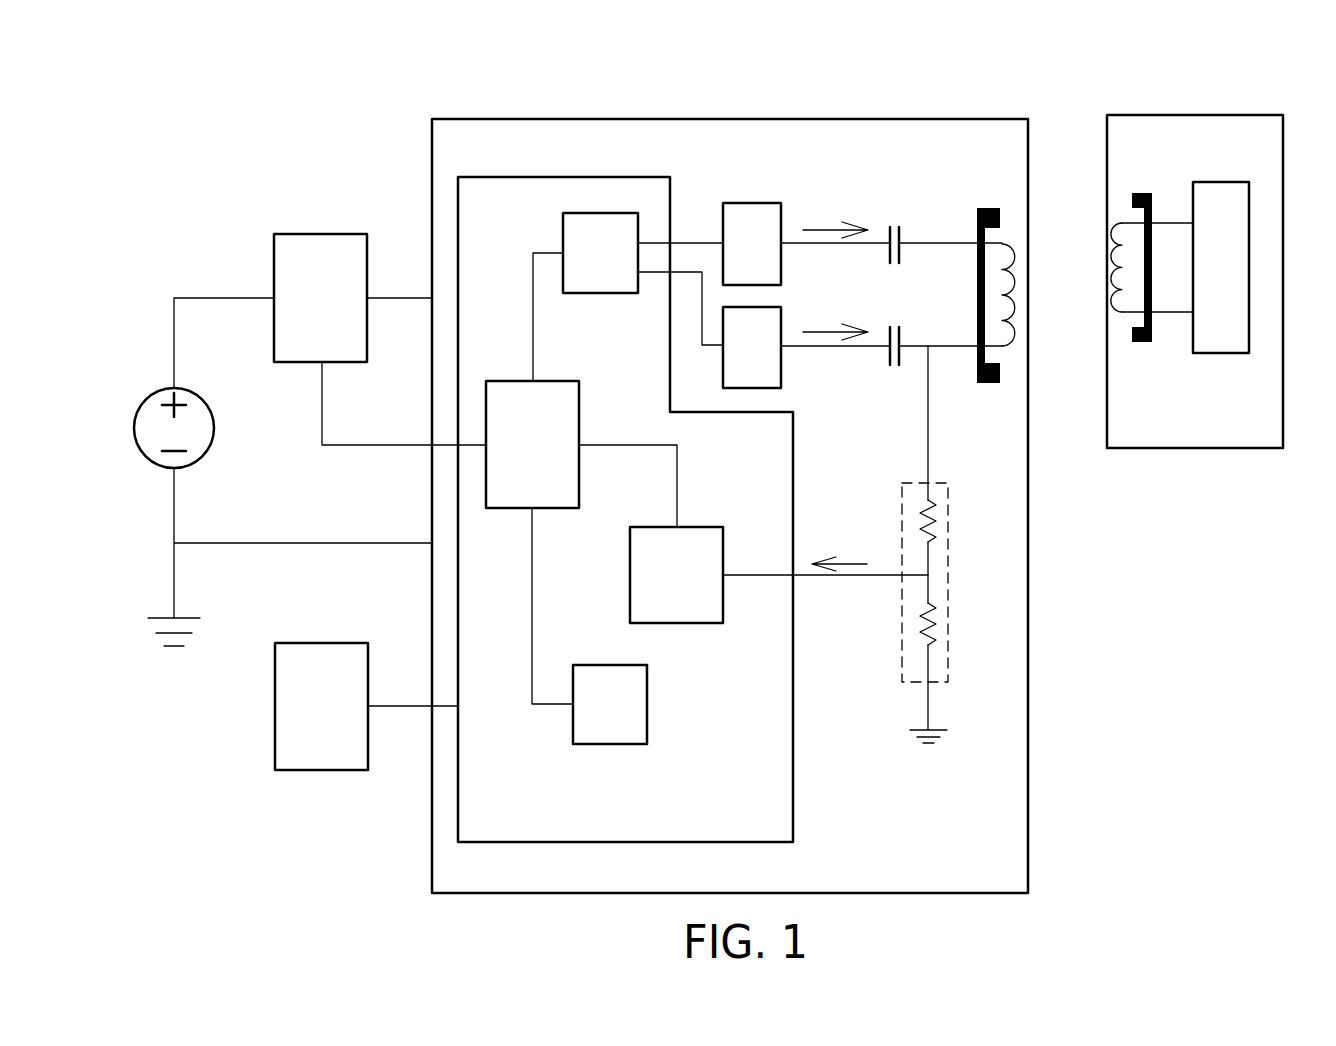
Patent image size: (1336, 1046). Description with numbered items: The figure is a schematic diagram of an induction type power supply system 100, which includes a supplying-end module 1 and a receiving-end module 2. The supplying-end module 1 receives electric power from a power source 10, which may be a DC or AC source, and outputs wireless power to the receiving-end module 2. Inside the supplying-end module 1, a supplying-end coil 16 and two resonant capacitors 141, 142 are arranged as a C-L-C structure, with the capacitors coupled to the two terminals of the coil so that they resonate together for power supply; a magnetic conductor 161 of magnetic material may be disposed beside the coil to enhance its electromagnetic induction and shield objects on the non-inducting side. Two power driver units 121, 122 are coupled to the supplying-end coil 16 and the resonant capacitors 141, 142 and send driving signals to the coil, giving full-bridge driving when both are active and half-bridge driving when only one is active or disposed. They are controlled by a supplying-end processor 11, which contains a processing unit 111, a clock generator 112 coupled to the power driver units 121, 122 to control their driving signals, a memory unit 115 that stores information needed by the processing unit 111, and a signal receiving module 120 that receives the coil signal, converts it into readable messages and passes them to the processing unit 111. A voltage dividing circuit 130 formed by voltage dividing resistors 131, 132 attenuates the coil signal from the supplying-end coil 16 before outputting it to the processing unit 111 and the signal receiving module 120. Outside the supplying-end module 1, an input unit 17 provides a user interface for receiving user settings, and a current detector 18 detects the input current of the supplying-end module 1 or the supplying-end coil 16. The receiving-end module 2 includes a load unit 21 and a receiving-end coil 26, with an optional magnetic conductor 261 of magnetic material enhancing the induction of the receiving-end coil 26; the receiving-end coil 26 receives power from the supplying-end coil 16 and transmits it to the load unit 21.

The induction type power supply system 100 is at (222, 130).
The supplying-end module 1 is at (1028, 757).
The receiving-end module 2 is at (1193, 448).
The power source 10 is at (217, 428).
The supplying-end processor 11 is at (793, 757).
The supplying-end coil 16 is at (1016, 253).
The magnetic conductor 161 is at (990, 208).
The input unit 17 is at (336, 728).
The current detector 18 is at (337, 316).
The processing unit 111 is at (553, 465).
The clock generator 112 is at (623, 275).
The memory unit 115 is at (633, 721).
The signal receiving module 120 is at (699, 596).
The power driver unit 121 is at (773, 266).
The power driver unit 122 is at (773, 368).
The voltage dividing circuit 130 is at (922, 577).
The voltage dividing resistor 131 is at (935, 518).
The voltage dividing resistor 132 is at (935, 621).
The resonant capacitor 141 is at (895, 227).
The resonant capacitor 142 is at (895, 327).
The load unit 21 is at (1235, 285).
The receiving-end coil 26 is at (1117, 228).
The magnetic conductor 261 is at (1140, 193).